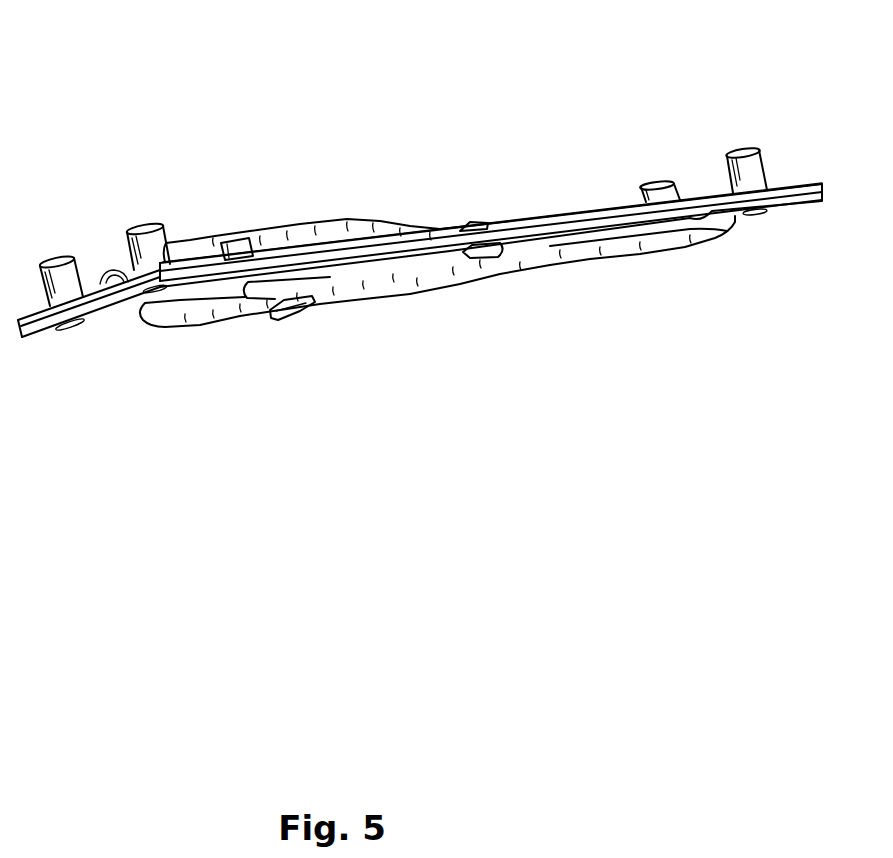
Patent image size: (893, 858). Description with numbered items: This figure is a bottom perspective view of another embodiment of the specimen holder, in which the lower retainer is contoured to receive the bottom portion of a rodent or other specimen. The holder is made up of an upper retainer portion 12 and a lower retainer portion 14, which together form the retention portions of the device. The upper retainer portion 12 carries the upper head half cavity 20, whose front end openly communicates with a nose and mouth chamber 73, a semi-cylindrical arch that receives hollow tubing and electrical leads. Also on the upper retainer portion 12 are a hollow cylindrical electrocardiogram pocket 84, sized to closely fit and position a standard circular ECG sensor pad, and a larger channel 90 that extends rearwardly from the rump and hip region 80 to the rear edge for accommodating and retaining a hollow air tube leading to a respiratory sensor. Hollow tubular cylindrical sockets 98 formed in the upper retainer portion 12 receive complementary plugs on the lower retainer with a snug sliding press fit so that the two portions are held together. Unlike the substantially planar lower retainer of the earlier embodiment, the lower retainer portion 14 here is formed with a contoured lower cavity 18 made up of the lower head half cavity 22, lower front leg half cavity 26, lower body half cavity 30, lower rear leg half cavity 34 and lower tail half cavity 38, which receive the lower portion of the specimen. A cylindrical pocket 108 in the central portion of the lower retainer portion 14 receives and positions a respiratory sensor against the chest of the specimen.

The upper retainer portion 12 is at (790, 185).
The lower retainer portion 14 is at (110, 307).
The contoured lower cavity 18 is at (417, 280).
The upper head half cavity 20 is at (187, 236).
The lower head half cavity 22 is at (193, 310).
The lower front leg half cavity 26 is at (263, 288).
The lower body half cavity 30 is at (345, 290).
The lower rear leg half cavity 34 is at (490, 249).
The lower tail half cavity 38 is at (633, 258).
The nose and mouth chamber 73 is at (118, 270).
The rump and hip region 80 is at (354, 221).
The electrocardiogram pocket 84 is at (246, 237).
The channel 90 is at (557, 212).
The cylindrical socket 98 is at (147, 237).
The cylindrical pocket 108 is at (290, 318).